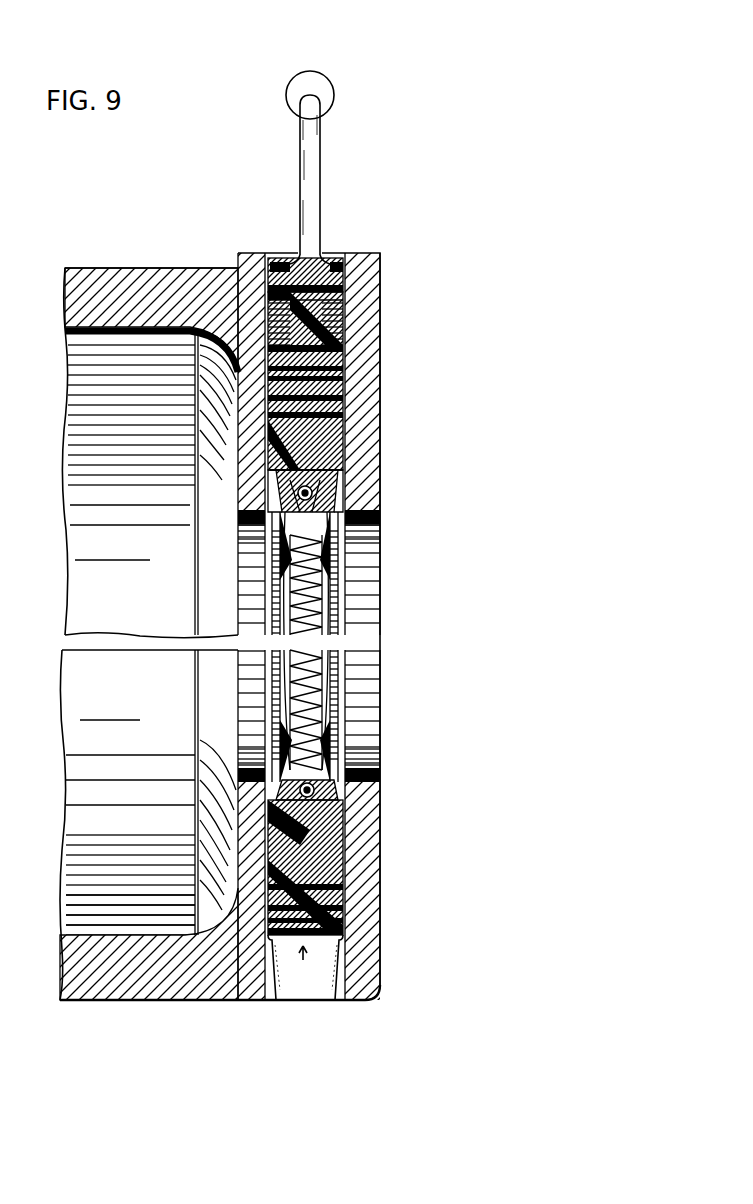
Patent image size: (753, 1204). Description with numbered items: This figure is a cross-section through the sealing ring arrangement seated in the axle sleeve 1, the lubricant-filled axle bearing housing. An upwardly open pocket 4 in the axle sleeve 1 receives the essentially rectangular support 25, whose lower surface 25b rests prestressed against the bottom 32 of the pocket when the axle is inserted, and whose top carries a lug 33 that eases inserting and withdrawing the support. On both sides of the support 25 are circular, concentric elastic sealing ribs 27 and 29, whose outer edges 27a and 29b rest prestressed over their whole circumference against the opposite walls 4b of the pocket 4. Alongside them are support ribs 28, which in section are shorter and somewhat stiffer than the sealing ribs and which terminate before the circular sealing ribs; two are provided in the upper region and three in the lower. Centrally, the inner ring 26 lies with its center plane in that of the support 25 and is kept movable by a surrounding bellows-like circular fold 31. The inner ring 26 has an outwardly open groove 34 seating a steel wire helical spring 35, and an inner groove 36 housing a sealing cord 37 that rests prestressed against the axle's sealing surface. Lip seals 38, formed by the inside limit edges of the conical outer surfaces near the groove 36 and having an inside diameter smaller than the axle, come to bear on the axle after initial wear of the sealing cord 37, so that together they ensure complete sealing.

The axle sleeve 1 is at (100, 260).
The pocket 4 is at (340, 262).
The opposite walls of pocket 4b is at (270, 308).
The support 25 is at (325, 345).
The lower surface 25b is at (306, 962).
The inner ring 26 is at (340, 607).
The sealing ribs 27 is at (272, 406).
The outer edges of sealing ribs 27a is at (345, 413).
The support ribs 28 is at (348, 286).
The sealing rib 29 is at (286, 262).
The outer edge of sealing rib 29b is at (290, 272).
The bellows-like fold 31 is at (345, 443).
The bottom of the pocket 32 is at (345, 950).
The lug 33 is at (312, 150).
The outwardly open groove 34 is at (300, 501).
The steel wire helical spring 35 is at (334, 498).
The groove 36 is at (280, 517).
The sealing cord 37 is at (335, 602).
The lip seals 38 is at (340, 548).